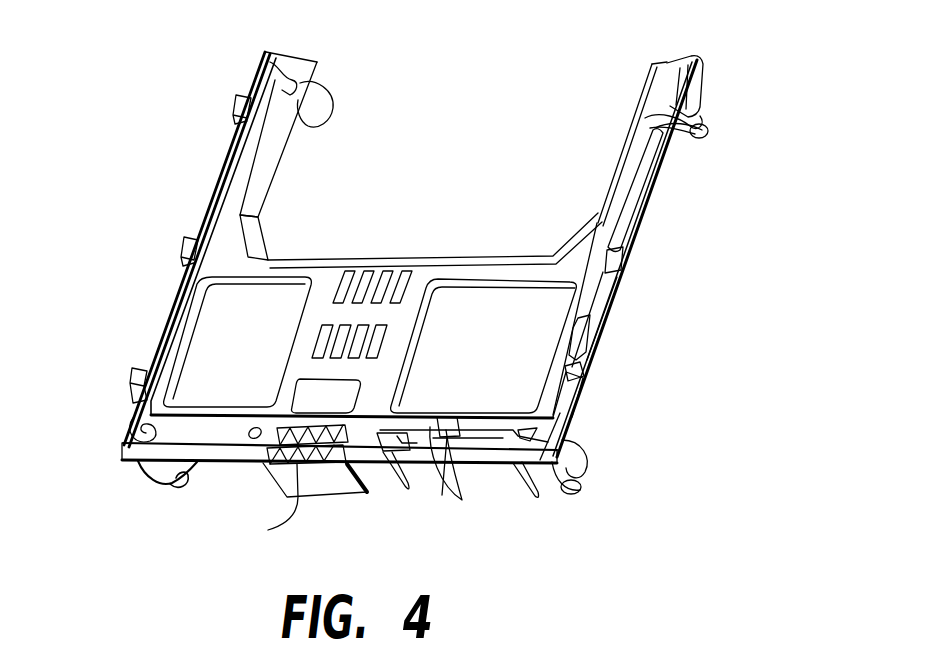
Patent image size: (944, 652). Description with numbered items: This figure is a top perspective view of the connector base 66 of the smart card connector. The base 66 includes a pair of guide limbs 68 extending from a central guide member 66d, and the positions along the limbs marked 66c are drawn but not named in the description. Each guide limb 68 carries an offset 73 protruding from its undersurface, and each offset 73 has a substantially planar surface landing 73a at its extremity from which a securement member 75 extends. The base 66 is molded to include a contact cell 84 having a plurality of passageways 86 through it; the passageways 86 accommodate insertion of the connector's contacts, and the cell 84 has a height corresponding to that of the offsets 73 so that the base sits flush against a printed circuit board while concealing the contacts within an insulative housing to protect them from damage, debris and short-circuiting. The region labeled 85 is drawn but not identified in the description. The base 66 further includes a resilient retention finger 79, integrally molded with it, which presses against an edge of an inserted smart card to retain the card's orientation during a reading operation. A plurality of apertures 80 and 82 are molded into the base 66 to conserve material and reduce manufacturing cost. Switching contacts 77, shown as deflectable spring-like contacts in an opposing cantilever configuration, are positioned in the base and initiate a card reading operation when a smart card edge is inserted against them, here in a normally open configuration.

The connector base 66 is at (523, 113).
The retention tabs 66c is at (236, 102).
The central guide member 66d is at (228, 258).
The guide limb 68 is at (250, 167).
The offset 73 is at (313, 97).
The surface landing 73a is at (657, 127).
The securement member 75 is at (697, 130).
The switching contact 77 is at (462, 500).
The resilient retention finger 79 is at (586, 356).
The aperture 80 is at (343, 270).
The aperture 82 is at (278, 302).
The contact cell 84 is at (382, 452).
The connector housing 85 is at (333, 480).
The passageway 86 is at (289, 486).